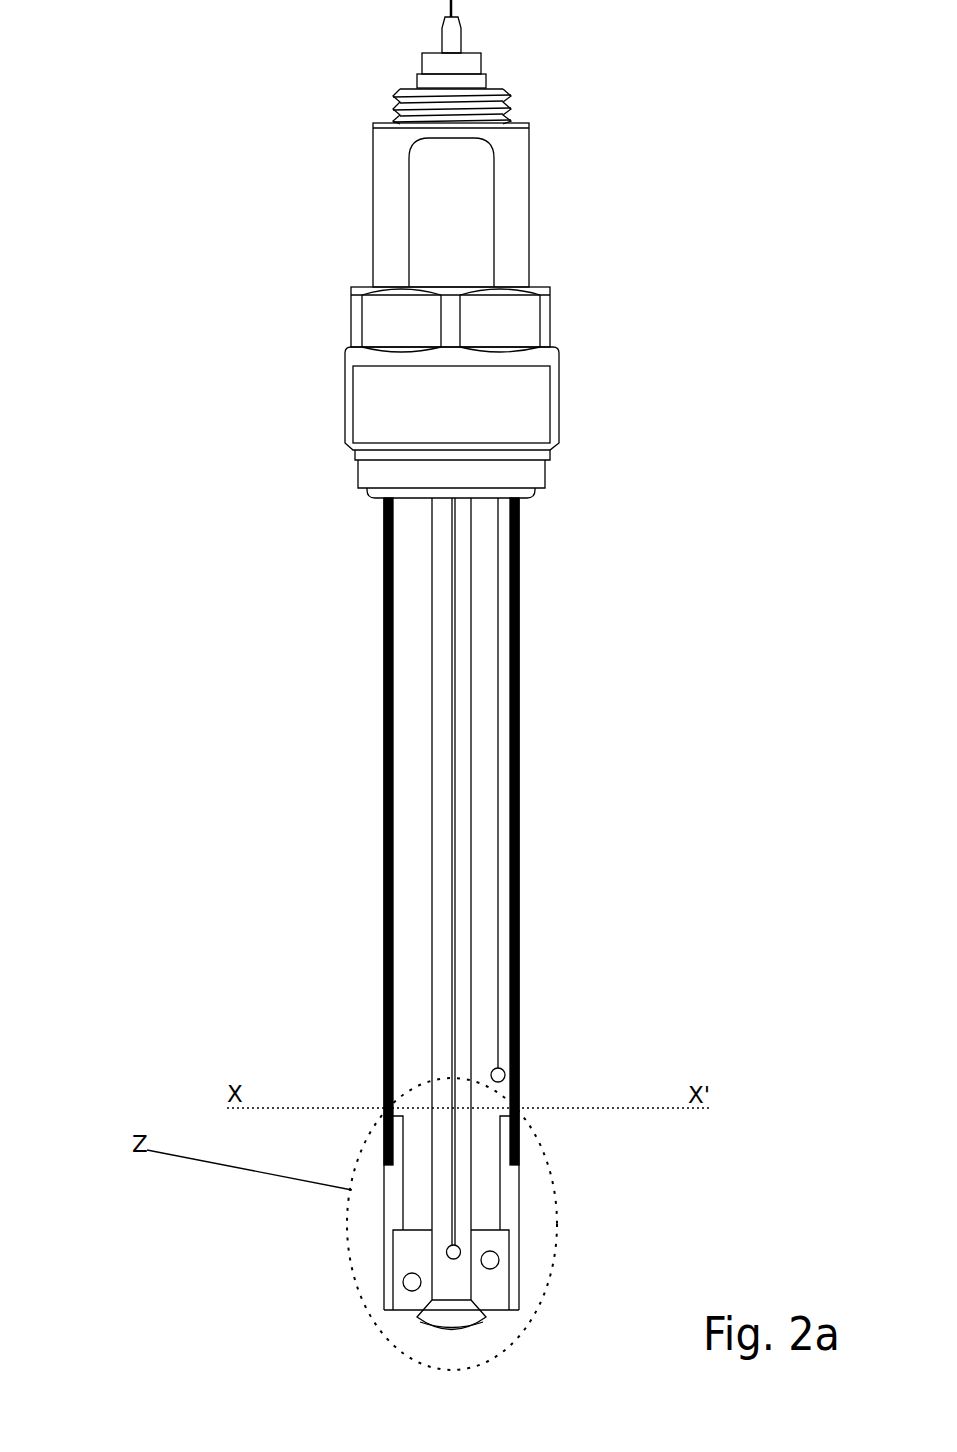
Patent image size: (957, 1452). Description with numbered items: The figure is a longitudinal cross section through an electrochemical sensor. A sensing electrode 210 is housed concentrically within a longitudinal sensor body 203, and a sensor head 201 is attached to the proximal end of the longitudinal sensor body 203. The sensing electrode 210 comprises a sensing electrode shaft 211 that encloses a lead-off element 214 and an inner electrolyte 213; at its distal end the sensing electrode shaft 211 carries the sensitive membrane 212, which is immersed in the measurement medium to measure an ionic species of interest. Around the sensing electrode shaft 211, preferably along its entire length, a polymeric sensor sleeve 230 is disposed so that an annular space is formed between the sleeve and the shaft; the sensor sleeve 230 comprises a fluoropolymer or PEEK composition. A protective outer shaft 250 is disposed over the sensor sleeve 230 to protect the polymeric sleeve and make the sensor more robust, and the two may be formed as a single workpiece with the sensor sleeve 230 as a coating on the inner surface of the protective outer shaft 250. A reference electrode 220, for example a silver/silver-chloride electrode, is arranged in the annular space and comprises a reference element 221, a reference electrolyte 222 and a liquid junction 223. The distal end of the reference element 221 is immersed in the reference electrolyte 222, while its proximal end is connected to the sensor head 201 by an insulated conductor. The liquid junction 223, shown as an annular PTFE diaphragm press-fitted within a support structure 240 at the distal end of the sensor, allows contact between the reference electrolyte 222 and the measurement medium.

The sensor head 201 is at (533, 245).
The longitudinal sensor body 203 is at (255, 670).
The sensing electrode 210 is at (612, 914).
The sensing electrode shaft 211 is at (470, 839).
The sensitive membrane 212 is at (463, 1328).
The inner electrolyte 213 is at (463, 910).
The lead-off element 214 is at (454, 964).
The reference electrode 220 is at (599, 894).
The reference element 221 is at (498, 1045).
The reference electrolyte 222 is at (485, 1180).
The liquid junction 223 is at (488, 1262).
The sensor sleeve 230 is at (386, 958).
The support structure 240 is at (393, 1211).
The protective outer shaft 250 is at (386, 862).